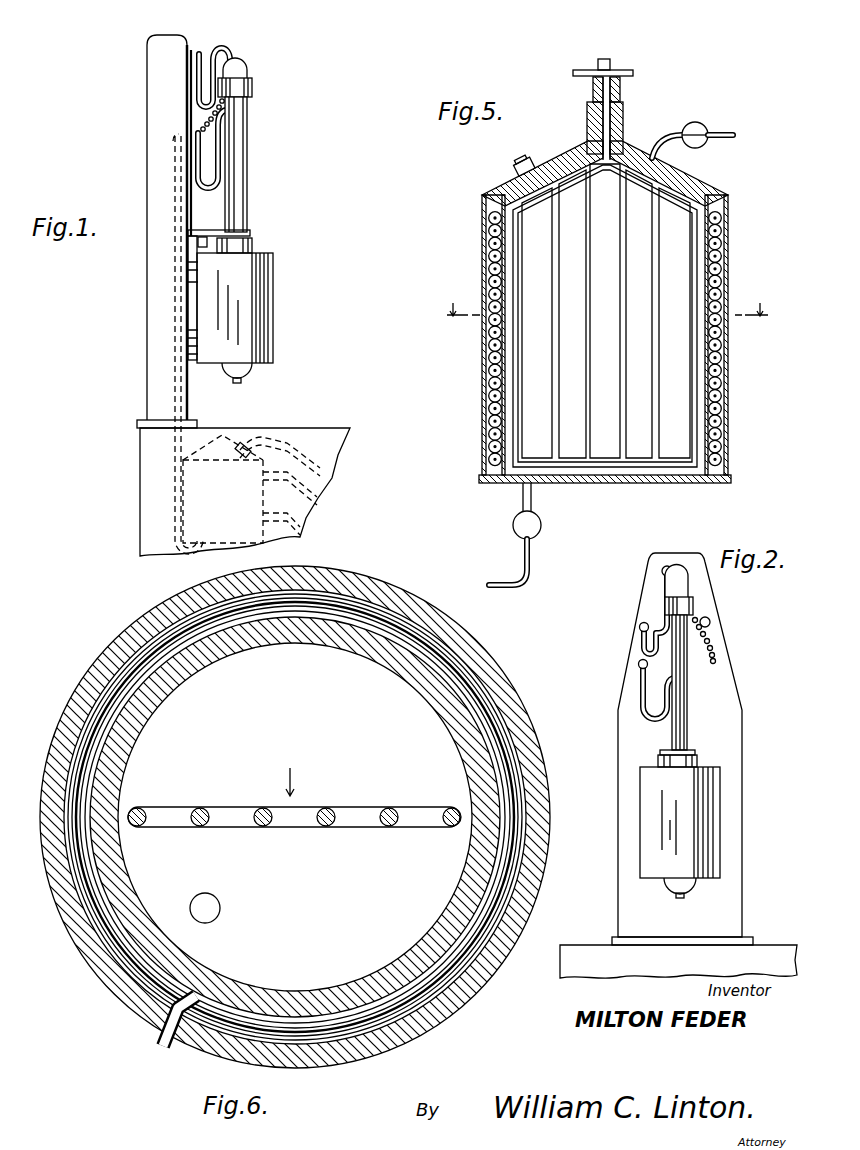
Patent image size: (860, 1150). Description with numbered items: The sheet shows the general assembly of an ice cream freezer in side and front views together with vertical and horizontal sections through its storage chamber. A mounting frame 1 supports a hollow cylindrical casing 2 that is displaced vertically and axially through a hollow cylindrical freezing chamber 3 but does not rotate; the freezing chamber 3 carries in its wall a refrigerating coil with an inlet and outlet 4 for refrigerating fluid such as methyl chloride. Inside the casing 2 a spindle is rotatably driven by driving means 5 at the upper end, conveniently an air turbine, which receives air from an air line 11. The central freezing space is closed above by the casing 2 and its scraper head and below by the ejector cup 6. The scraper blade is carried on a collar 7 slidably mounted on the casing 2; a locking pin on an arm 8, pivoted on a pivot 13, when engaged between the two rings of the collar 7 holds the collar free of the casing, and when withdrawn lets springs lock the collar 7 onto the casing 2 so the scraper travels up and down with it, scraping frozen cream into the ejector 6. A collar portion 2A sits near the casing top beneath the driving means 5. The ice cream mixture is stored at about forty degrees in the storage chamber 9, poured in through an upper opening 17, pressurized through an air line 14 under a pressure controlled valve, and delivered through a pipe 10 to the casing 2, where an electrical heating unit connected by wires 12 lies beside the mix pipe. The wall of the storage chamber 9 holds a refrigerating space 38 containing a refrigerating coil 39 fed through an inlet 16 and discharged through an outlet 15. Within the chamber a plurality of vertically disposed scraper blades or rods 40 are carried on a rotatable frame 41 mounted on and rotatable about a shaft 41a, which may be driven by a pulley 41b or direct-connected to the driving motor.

In FIG. 1, the mounting frame 1 is at (160, 88).
In FIG. 2, the mounting frame 1 is at (735, 697).
In FIG. 1, the hollow cylindrical casing 2 is at (248, 149).
In FIG. 2, the hollow cylindrical casing 2 is at (688, 690).
In FIG. 1, the collar 2A is at (253, 90).
In FIG. 1, the hollow cylindrical freezing chamber 3 is at (273, 277).
In FIG. 2, the hollow cylindrical freezing chamber 3 is at (712, 797).
In FIG. 1, the inlet and outlet 4 is at (190, 270).
In FIG. 1, the driving means 5 is at (238, 62).
In FIG. 2, the driving means 5 is at (683, 583).
In FIG. 6, the driving means 5 is at (42, 823).
In FIG. 1, the ejector cup 6 is at (252, 376).
In FIG. 5, the ejector cup 6 is at (606, 301).
In FIG. 2, the ejector cup 6 is at (688, 888).
In FIG. 1, the collar 7 is at (253, 248).
In FIG. 2, the collar 7 is at (698, 760).
In FIG. 1, the arm 8 is at (247, 234).
In FIG. 1, the storage chamber 9 is at (190, 500).
In FIG. 5, the storage chamber 9 is at (730, 383).
In FIG. 6, the storage chamber 9 is at (470, 1000).
In FIG. 1, the pipe 10 is at (207, 191).
In FIG. 5, the pipe 10 is at (542, 563).
In FIG. 2, the pipe 10 is at (655, 720).
In FIG. 1, the air line 11 is at (217, 50).
In FIG. 2, the air line 11 is at (662, 575).
In FIG. 1, the wires 12 is at (205, 130).
In FIG. 2, the wires 12 is at (716, 648).
In FIG. 1, the pivot 13 is at (198, 242).
In FIG. 1, the air line 14 is at (322, 470).
In FIG. 5, the air line 14 is at (670, 152).
In FIG. 1, the outlet 15 is at (318, 500).
In FIG. 1, the inlet 16 is at (301, 530).
In FIG. 1, the upper opening 17 is at (247, 447).
In FIG. 5, the refrigerating space 38 is at (486, 433).
In FIG. 5, the refrigerating coil 39 is at (490, 380).
In FIG. 6, the refrigerating coil 39 is at (160, 1030).
In FIG. 5, the scraper blades or rods 40 is at (585, 458).
In FIG. 6, the scraper blades or rods 40 is at (330, 805).
In FIG. 5, the rotatable frame 41 is at (679, 188).
In FIG. 6, the rotatable frame 41 is at (258, 808).
In FIG. 5, the shaft 41a is at (618, 101).
In FIG. 5, the pulley 41b is at (620, 74).